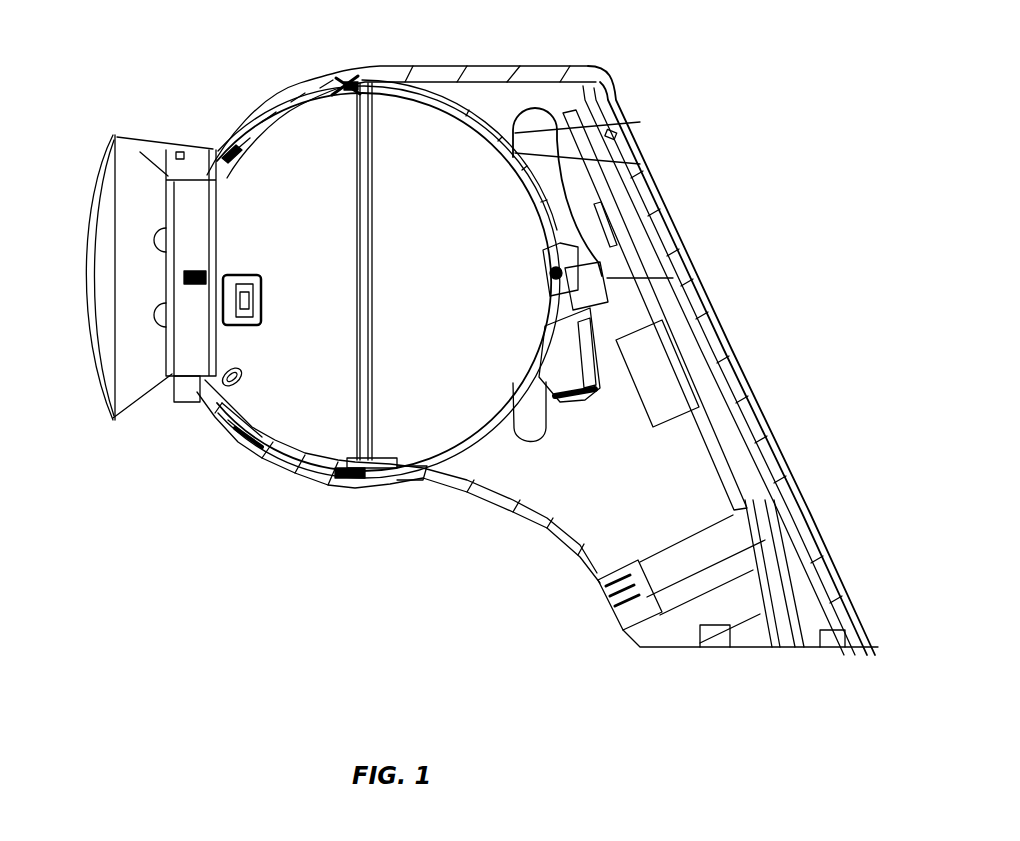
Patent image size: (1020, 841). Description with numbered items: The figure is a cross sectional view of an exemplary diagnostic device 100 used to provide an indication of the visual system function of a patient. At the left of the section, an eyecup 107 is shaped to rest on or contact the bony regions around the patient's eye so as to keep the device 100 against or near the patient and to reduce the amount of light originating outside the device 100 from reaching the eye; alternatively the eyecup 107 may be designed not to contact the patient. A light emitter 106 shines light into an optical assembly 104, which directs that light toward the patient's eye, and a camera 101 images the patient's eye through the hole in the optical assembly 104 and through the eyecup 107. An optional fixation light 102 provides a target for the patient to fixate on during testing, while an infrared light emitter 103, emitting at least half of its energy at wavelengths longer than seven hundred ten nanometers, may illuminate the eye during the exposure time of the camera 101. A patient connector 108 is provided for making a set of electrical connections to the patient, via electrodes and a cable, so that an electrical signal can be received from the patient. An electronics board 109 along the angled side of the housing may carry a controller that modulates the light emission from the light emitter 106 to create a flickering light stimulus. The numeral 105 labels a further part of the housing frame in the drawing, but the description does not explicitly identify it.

The device 100 is at (122, 594).
The camera 101 is at (557, 348).
The fixation light 102 is at (545, 280).
The infrared light emitter 103 is at (545, 262).
The optical assembly 104 is at (420, 413).
The lower hinge 105 is at (255, 410).
The light emitter 106 is at (222, 140).
The eyecup 107 is at (100, 303).
The patient connector 108 is at (590, 606).
The electronics board 109 is at (768, 412).